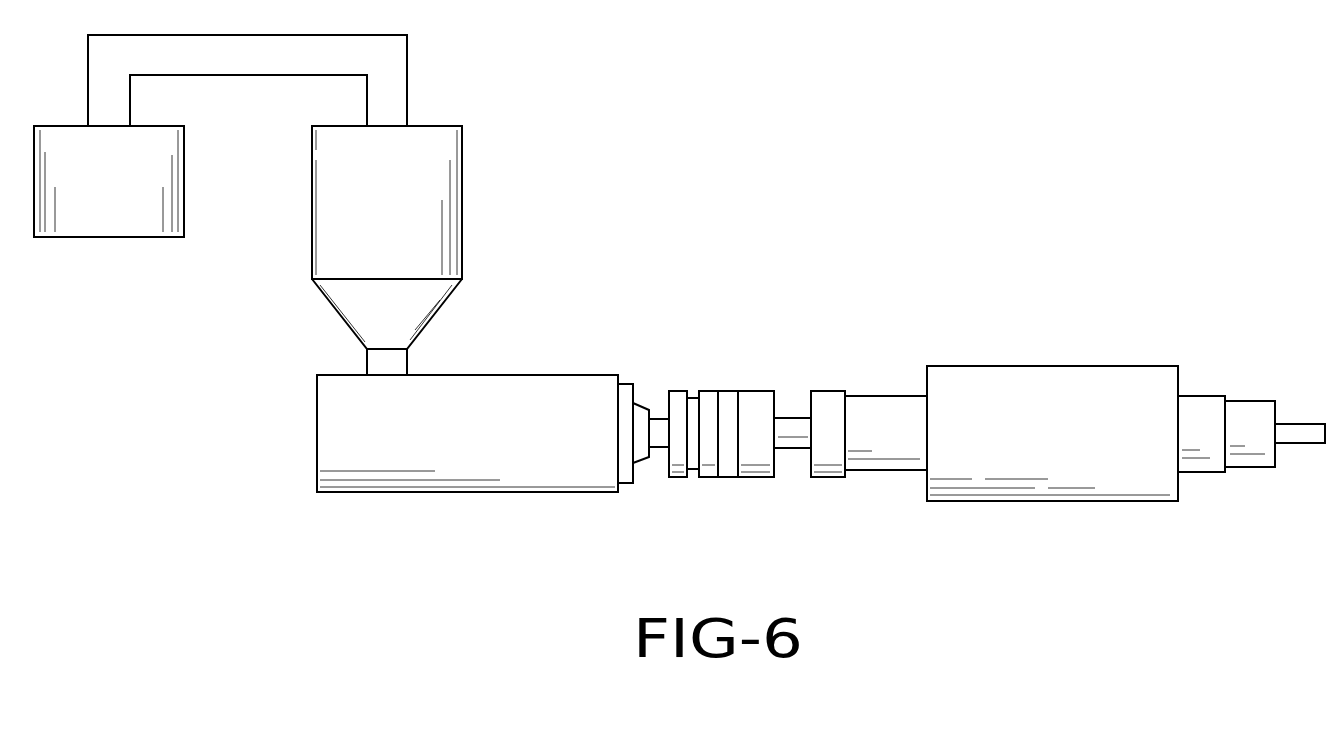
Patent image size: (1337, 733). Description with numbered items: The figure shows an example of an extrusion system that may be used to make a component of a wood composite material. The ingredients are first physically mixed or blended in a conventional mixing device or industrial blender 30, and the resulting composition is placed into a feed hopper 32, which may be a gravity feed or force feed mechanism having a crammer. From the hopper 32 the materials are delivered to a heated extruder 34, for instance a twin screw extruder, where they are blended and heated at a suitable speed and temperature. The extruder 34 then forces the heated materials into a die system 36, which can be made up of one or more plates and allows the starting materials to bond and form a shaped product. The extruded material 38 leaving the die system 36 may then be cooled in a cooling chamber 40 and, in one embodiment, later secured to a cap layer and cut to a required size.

The industrial blender 30 is at (127, 198).
The feed hopper 32 is at (406, 220).
The heated extruder 34 is at (486, 451).
The die system 36 is at (663, 375).
The extruded material 38 is at (1292, 443).
The cooling chamber 40 is at (1034, 450).